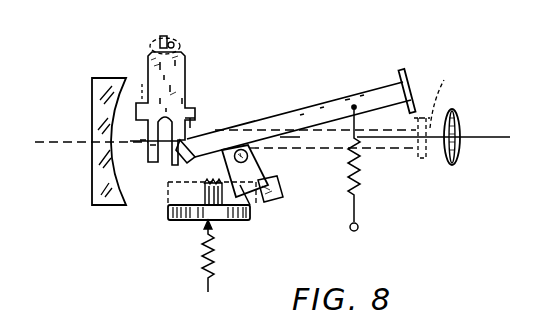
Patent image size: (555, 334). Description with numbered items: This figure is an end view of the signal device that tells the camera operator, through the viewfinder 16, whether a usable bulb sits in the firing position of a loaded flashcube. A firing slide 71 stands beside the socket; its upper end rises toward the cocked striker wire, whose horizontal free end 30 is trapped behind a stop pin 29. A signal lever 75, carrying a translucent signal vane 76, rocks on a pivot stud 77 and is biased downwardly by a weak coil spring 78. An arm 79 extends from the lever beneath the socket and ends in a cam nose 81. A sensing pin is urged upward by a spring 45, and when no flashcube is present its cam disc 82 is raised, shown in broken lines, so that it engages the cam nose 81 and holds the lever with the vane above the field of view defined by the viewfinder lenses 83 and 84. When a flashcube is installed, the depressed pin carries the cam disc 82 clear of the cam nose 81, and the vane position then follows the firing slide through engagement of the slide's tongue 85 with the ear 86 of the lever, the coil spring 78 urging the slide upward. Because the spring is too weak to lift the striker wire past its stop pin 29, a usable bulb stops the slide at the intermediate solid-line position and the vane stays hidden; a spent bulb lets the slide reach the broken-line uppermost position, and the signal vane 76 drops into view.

The viewfinder 16 is at (88, 122).
The stop pin 29 is at (152, 40).
The free end of the striker wire 30 is at (168, 38).
The spring 45 is at (216, 264).
The firing slide 71 is at (163, 90).
The signal lever 75 is at (296, 118).
The signal vane 76 is at (412, 82).
The pivot stud 77 is at (241, 149).
The coil spring 78 is at (360, 181).
The arm 79 is at (270, 186).
The cam nose 81 is at (252, 193).
The cam disc 82 is at (168, 209).
The lens 83 is at (94, 84).
The lens 84 is at (458, 125).
The tongue 85 is at (184, 117).
The ear 86 is at (182, 153).